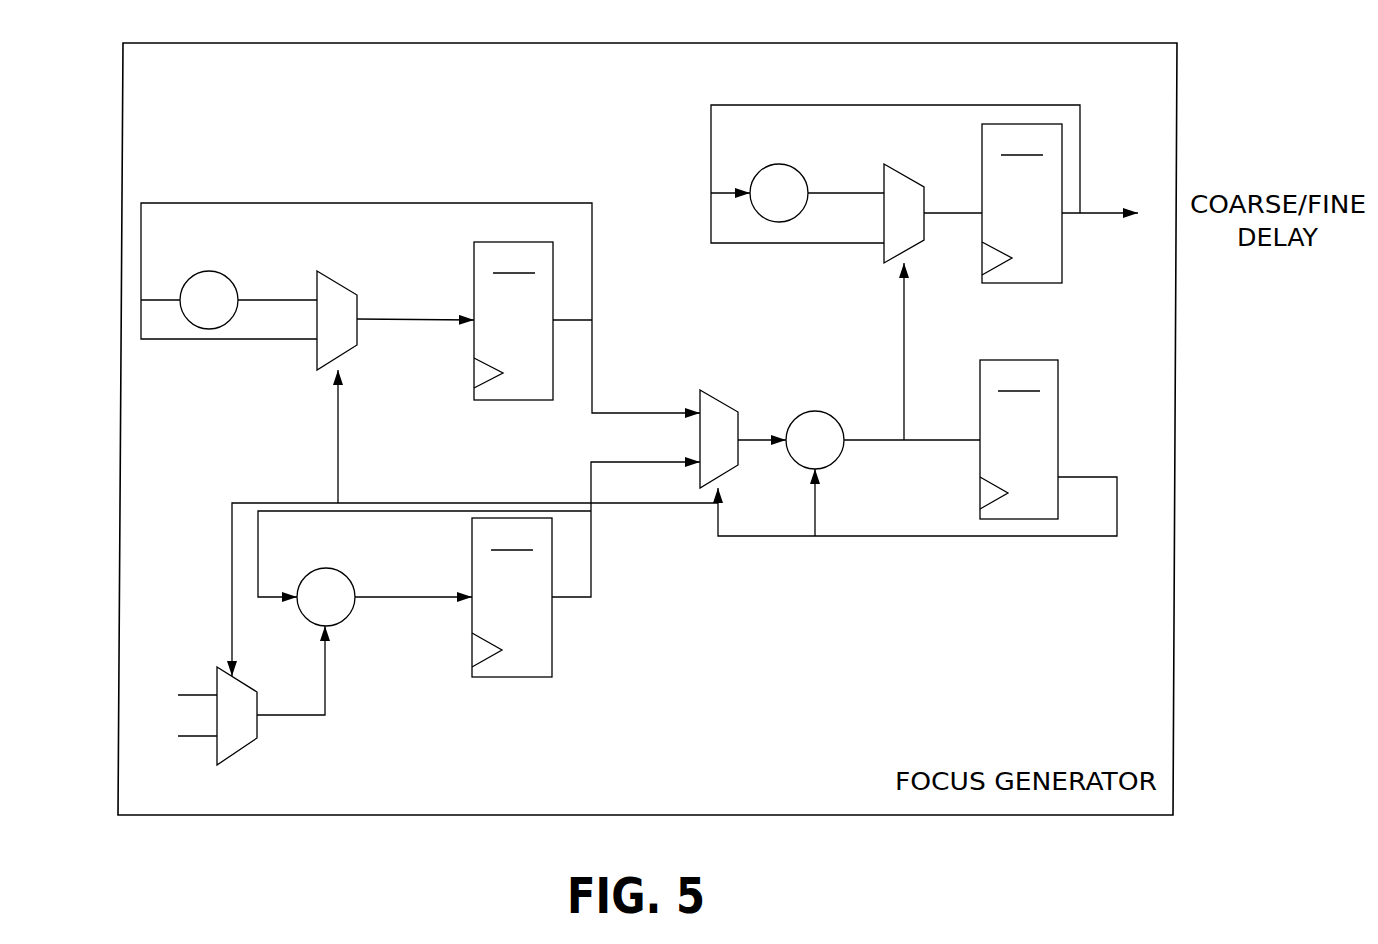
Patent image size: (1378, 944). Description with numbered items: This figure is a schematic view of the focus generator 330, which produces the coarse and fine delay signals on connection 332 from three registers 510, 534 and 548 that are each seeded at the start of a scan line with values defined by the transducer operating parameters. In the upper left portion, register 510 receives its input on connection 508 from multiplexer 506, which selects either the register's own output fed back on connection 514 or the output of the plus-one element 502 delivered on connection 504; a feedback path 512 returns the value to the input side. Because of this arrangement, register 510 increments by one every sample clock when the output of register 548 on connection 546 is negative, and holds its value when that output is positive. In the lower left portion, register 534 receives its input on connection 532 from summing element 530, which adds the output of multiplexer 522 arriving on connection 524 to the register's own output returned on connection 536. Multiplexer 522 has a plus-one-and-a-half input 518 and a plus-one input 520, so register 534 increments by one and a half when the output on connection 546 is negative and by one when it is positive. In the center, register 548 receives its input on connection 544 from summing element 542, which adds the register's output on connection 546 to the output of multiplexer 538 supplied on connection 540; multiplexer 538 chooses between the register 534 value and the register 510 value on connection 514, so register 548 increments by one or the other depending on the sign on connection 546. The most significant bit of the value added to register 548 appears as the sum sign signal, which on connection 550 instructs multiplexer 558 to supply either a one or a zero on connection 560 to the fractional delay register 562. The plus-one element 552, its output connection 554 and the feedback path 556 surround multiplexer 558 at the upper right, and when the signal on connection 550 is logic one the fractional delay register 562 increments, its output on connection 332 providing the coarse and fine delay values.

The focus generator 330 is at (133, 75).
The connection 332 is at (1090, 214).
The +1 element 502 is at (215, 274).
The connection 504 is at (257, 301).
The multiplexer 506 is at (338, 283).
The connection 508 is at (380, 320).
The register 510 is at (513, 321).
The feedback line 512 is at (152, 300).
The connection 514 is at (592, 275).
The +1.5 input 518 is at (193, 695).
The +1.0 input 520 is at (197, 736).
The multiplexer 522 is at (235, 754).
The connection 524 is at (325, 679).
The summing element 530 is at (327, 568).
The connection 532 is at (373, 596).
The register 534 is at (512, 597).
The connection 536 is at (590, 486).
The multiplexer 538 is at (720, 398).
The connection 540 is at (757, 440).
The summing element 542 is at (822, 412).
The connection 544 is at (878, 441).
The connection 546 is at (897, 538).
The register 548 is at (1019, 439).
The connection 550 is at (904, 348).
The incrementer (+1) 552 is at (780, 165).
The incrementer output line 554 is at (820, 194).
The feedback line 556 is at (735, 244).
The multiplexer 558 is at (903, 178).
The connection 560 is at (952, 213).
The fractional delay register 562 is at (1022, 203).